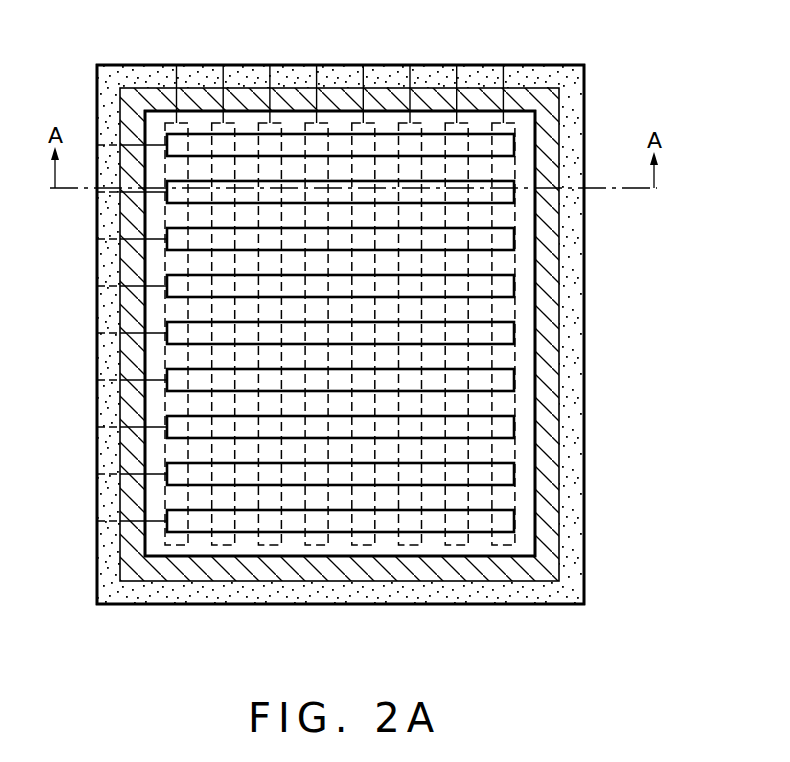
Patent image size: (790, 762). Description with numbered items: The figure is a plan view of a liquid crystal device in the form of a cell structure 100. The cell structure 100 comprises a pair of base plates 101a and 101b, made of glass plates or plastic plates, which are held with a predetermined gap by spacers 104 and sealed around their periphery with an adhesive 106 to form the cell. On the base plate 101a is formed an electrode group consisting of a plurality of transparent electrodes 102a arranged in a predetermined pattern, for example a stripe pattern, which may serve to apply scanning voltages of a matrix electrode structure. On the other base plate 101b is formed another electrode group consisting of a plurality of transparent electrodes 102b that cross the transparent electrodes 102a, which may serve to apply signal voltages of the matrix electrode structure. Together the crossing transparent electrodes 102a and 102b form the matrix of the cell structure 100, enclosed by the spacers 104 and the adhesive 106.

The cell structure 100 is at (400, 58).
The base plate 101a is at (442, 316).
The base plate 101b is at (523, 148).
The transparent electrodes 102a is at (502, 218).
The transparent electrodes 102b is at (248, 145).
The spacers 104 is at (490, 92).
The adhesive 106 is at (565, 502).